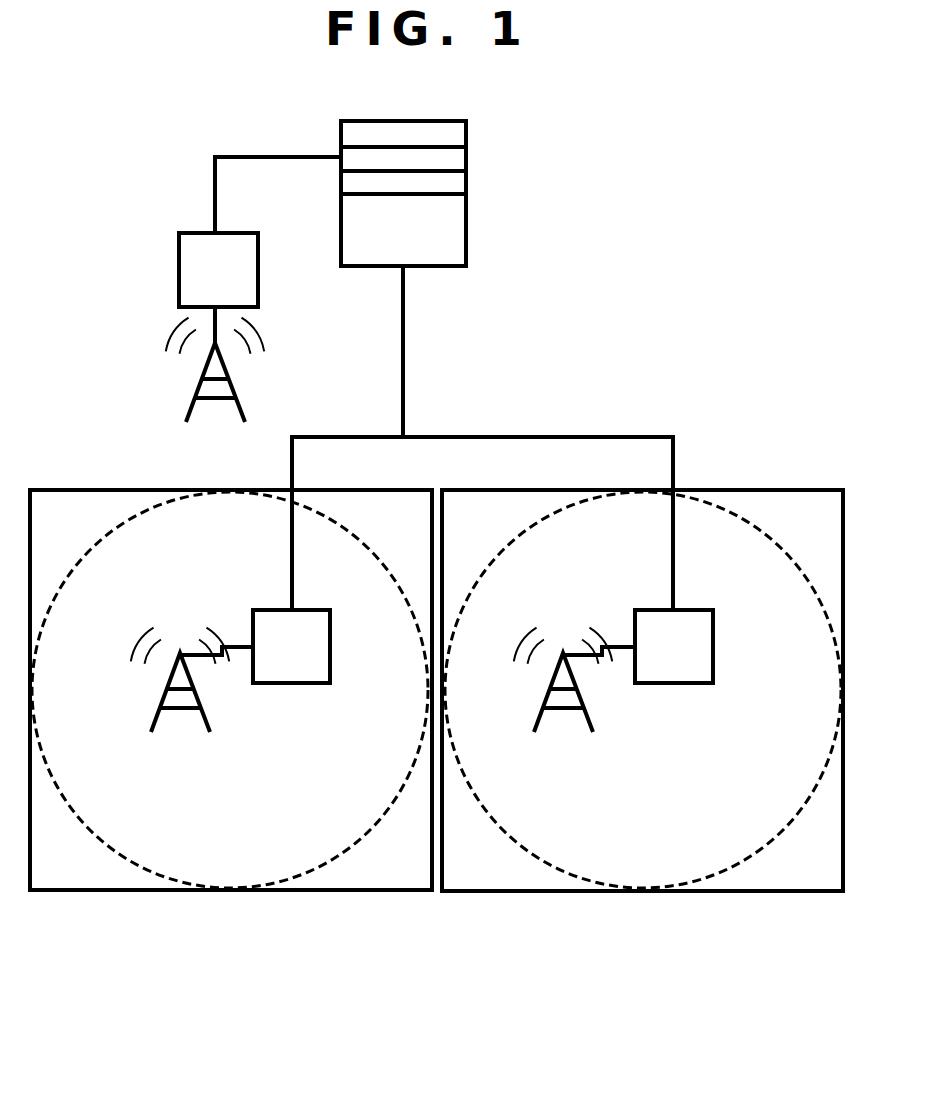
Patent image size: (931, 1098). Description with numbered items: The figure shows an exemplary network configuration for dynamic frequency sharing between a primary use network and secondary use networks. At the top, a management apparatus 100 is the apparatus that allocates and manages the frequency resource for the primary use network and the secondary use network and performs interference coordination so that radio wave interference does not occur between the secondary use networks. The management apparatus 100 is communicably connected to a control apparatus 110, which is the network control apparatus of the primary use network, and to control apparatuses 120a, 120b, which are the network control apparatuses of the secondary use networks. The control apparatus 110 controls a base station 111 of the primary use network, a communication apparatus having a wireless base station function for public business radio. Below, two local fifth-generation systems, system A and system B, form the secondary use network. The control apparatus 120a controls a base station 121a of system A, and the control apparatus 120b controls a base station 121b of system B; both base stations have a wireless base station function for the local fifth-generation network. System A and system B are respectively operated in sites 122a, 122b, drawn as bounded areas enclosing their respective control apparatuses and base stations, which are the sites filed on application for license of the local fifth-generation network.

The management apparatus 100 is at (466, 218).
The control apparatus 110 is at (178, 265).
The base station 111 is at (195, 393).
The control apparatus 120a is at (261, 610).
The base station 121a is at (155, 715).
The site 122a is at (352, 890).
The control apparatus 120b is at (643, 611).
The base station 121b is at (540, 711).
The site 122b is at (787, 892).